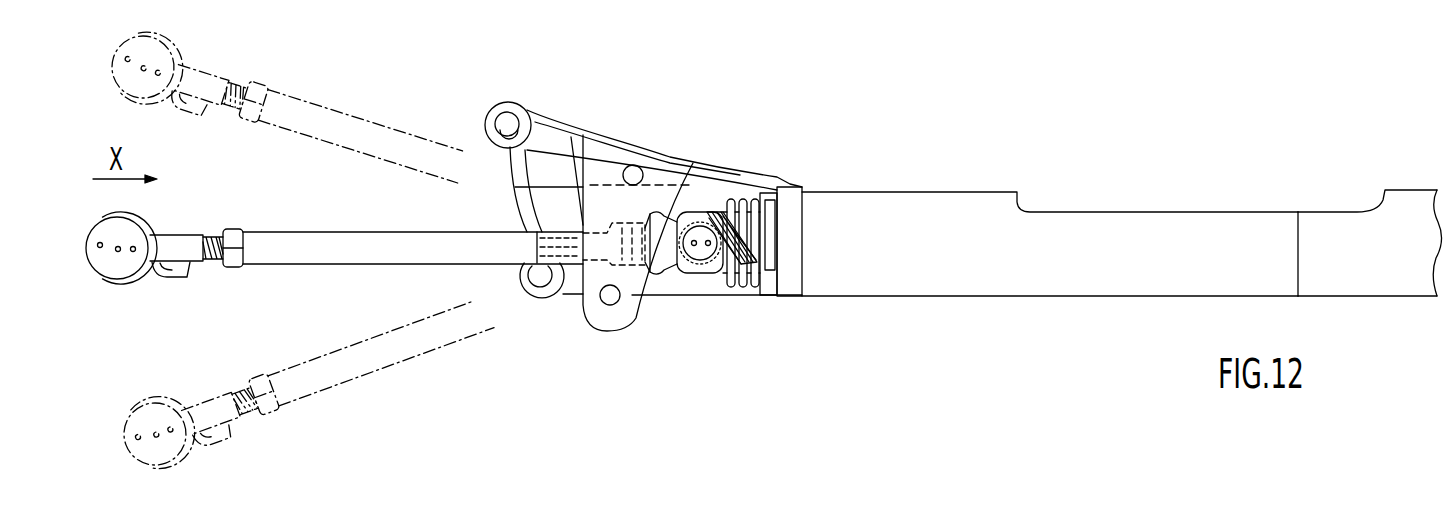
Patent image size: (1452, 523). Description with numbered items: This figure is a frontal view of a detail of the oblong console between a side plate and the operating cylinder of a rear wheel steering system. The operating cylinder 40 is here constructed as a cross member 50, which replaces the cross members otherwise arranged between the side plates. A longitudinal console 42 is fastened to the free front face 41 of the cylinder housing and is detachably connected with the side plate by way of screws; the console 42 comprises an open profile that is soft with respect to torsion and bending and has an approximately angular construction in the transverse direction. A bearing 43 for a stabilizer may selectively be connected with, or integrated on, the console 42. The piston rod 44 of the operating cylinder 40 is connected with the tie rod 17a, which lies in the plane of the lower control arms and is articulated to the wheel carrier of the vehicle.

The tie rod 17a is at (401, 250).
The operating cylinder 40 is at (1077, 240).
The free front face of the cylinder housing 41 is at (803, 192).
The longitudinal console 42 is at (712, 170).
The bearing 43 is at (595, 195).
The piston rod 44 is at (725, 282).
The cross member 50 is at (1290, 176).